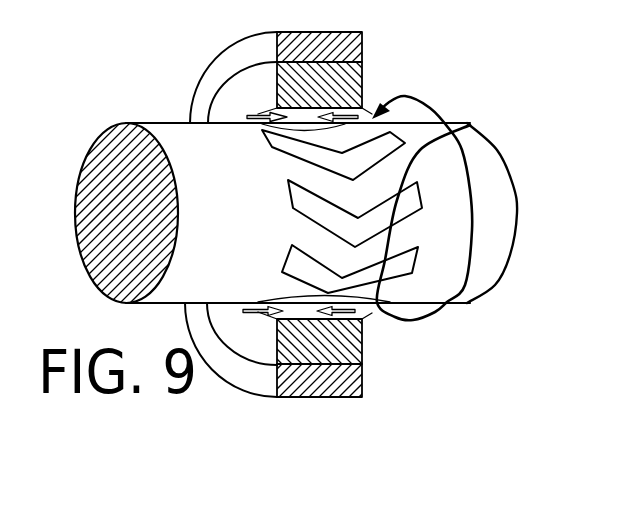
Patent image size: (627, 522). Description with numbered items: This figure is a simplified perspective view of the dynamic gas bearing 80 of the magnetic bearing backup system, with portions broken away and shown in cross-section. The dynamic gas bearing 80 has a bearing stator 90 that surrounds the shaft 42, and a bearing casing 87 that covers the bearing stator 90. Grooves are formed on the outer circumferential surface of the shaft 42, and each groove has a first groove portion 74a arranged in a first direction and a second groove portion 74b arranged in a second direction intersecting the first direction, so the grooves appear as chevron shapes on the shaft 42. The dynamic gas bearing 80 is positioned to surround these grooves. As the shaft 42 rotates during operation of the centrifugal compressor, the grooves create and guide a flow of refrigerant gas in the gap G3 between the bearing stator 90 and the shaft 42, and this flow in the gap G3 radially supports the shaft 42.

The shaft 42 is at (520, 203).
The first groove portion 74a is at (230, 180).
The second groove portion 74b is at (470, 125).
The dynamic gas bearing 80 is at (193, 83).
The bearing casing 87 is at (323, 397).
The bearing stator 90 is at (257, 93).
The gap G3 is at (362, 312).